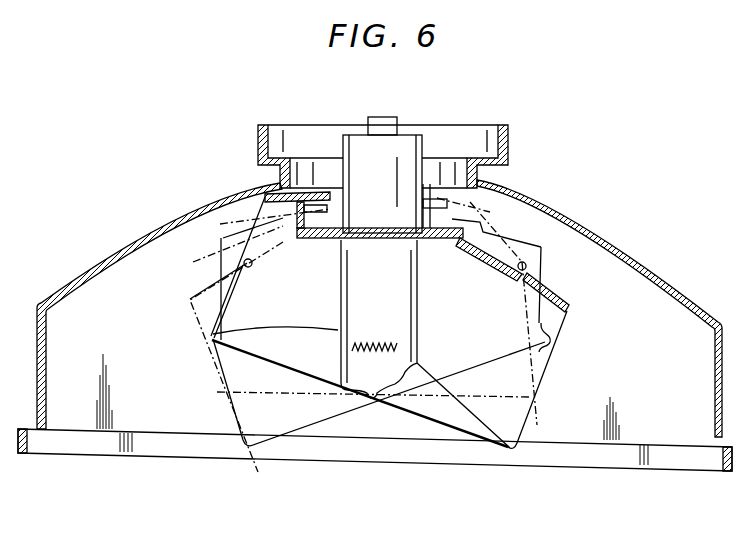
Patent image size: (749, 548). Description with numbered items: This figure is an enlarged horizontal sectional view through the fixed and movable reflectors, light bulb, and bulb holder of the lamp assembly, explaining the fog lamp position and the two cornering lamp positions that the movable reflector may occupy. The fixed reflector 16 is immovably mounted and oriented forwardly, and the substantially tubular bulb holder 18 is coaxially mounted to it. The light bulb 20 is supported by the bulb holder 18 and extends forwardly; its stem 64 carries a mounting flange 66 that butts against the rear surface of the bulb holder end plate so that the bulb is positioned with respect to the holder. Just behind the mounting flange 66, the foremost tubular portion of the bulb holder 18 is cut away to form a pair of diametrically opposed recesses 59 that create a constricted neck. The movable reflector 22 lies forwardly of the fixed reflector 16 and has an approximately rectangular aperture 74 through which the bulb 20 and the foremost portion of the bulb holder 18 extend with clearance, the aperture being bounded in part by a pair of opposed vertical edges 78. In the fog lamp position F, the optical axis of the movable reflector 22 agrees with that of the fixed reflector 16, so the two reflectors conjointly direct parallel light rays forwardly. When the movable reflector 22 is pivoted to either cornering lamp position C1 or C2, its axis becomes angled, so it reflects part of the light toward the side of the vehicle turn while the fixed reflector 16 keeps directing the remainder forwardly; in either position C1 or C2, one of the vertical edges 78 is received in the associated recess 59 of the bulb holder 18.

The fixed reflector 16 is at (638, 254).
The bulb holder 18 is at (477, 127).
The light bulb 20 is at (339, 338).
The movable reflector 22 is at (570, 308).
The recesses 59 is at (333, 190).
The stem 64 is at (402, 117).
The mounting flange 66 is at (420, 243).
The aperture 74 is at (250, 272).
The vertical edges 78 is at (424, 202).
The cornering lamp position C1 is at (492, 451).
The cornering lamp position C2 is at (258, 472).
The fog lamp position F is at (314, 393).